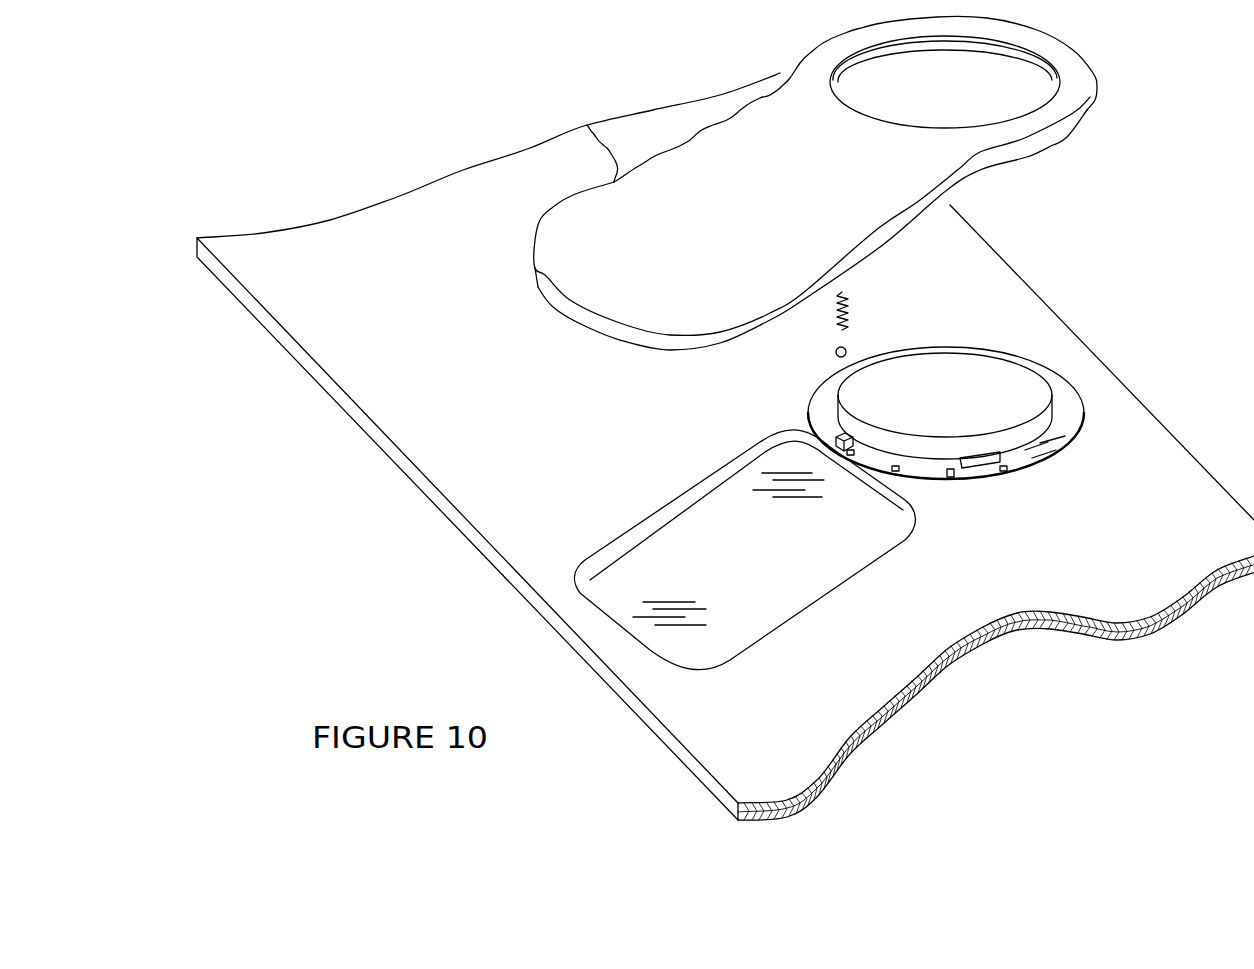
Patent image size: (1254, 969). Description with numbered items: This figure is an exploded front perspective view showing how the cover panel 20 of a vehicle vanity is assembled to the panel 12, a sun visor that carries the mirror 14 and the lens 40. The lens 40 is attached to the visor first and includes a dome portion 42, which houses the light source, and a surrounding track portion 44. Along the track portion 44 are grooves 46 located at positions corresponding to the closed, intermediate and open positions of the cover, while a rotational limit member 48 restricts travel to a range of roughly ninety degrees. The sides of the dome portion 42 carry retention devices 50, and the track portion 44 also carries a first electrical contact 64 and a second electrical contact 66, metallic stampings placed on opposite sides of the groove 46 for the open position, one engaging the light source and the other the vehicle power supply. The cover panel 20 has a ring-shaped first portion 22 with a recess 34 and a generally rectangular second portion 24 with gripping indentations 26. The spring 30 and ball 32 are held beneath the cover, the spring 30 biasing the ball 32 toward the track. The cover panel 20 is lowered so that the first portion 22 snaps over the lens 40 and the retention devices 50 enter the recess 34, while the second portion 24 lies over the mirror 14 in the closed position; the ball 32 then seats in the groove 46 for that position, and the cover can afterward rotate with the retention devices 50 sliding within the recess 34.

The panel 12 is at (353, 247).
The mirror 14 is at (717, 564).
The cover panel 20 is at (768, 130).
The first portion 22 is at (1077, 68).
The second portion 24 is at (663, 307).
The indentations 26 is at (590, 127).
The spring 30 is at (853, 297).
The ball 32 is at (835, 352).
The recess 34 is at (965, 48).
The lens 40 is at (1080, 398).
The dome portion 42 is at (977, 382).
The track portion 44 is at (877, 460).
The grooves 46 is at (948, 469).
The rotational limit member 48 is at (846, 434).
The retention devices 50 is at (980, 464).
The first electrical contact 64 is at (1043, 468).
The second electrical contact 66 is at (1063, 463).